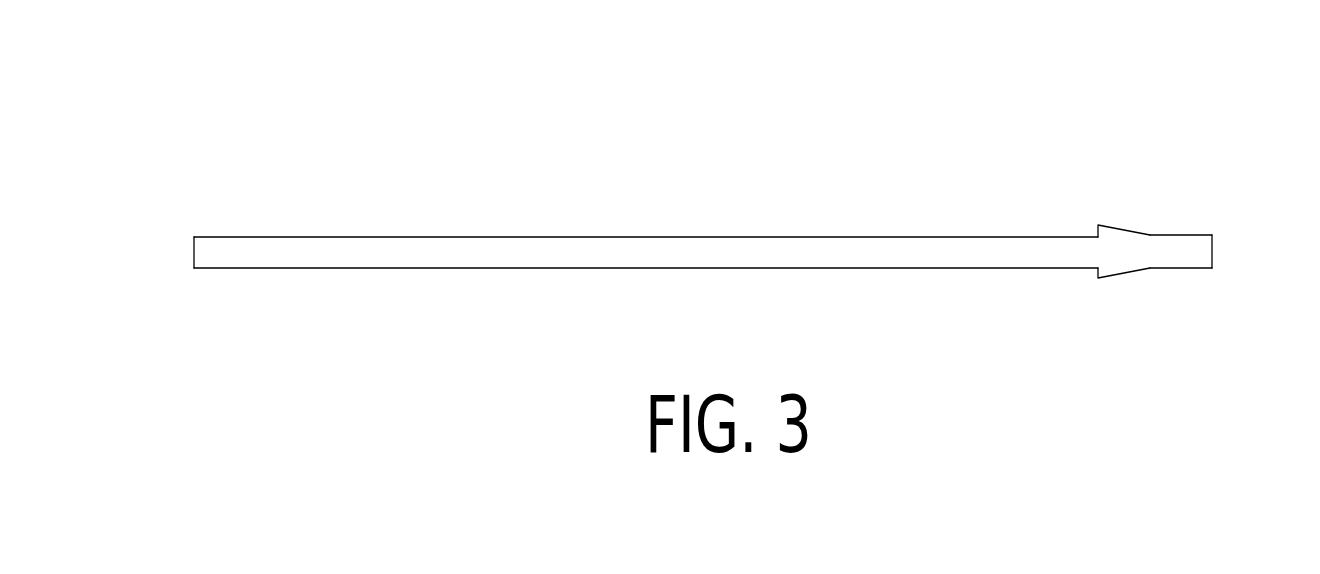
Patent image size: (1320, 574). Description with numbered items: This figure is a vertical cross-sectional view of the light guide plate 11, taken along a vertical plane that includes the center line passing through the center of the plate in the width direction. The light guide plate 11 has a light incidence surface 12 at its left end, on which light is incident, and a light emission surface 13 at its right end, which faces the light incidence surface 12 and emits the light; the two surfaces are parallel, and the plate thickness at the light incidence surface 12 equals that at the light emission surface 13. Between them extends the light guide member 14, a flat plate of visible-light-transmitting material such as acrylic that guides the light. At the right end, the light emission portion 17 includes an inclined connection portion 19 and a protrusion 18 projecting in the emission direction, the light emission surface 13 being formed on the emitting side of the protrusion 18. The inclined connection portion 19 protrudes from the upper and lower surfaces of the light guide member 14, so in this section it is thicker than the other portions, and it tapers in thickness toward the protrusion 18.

The light guide plate 11 is at (278, 112).
The light incidence surface 12 is at (194, 248).
The light emission surface 13 is at (1212, 253).
The light guide member 14 is at (687, 250).
The light emission portion 17 is at (1198, 152).
The protrusion 18 is at (1185, 244).
The inclined connection portion 19 is at (1133, 243).